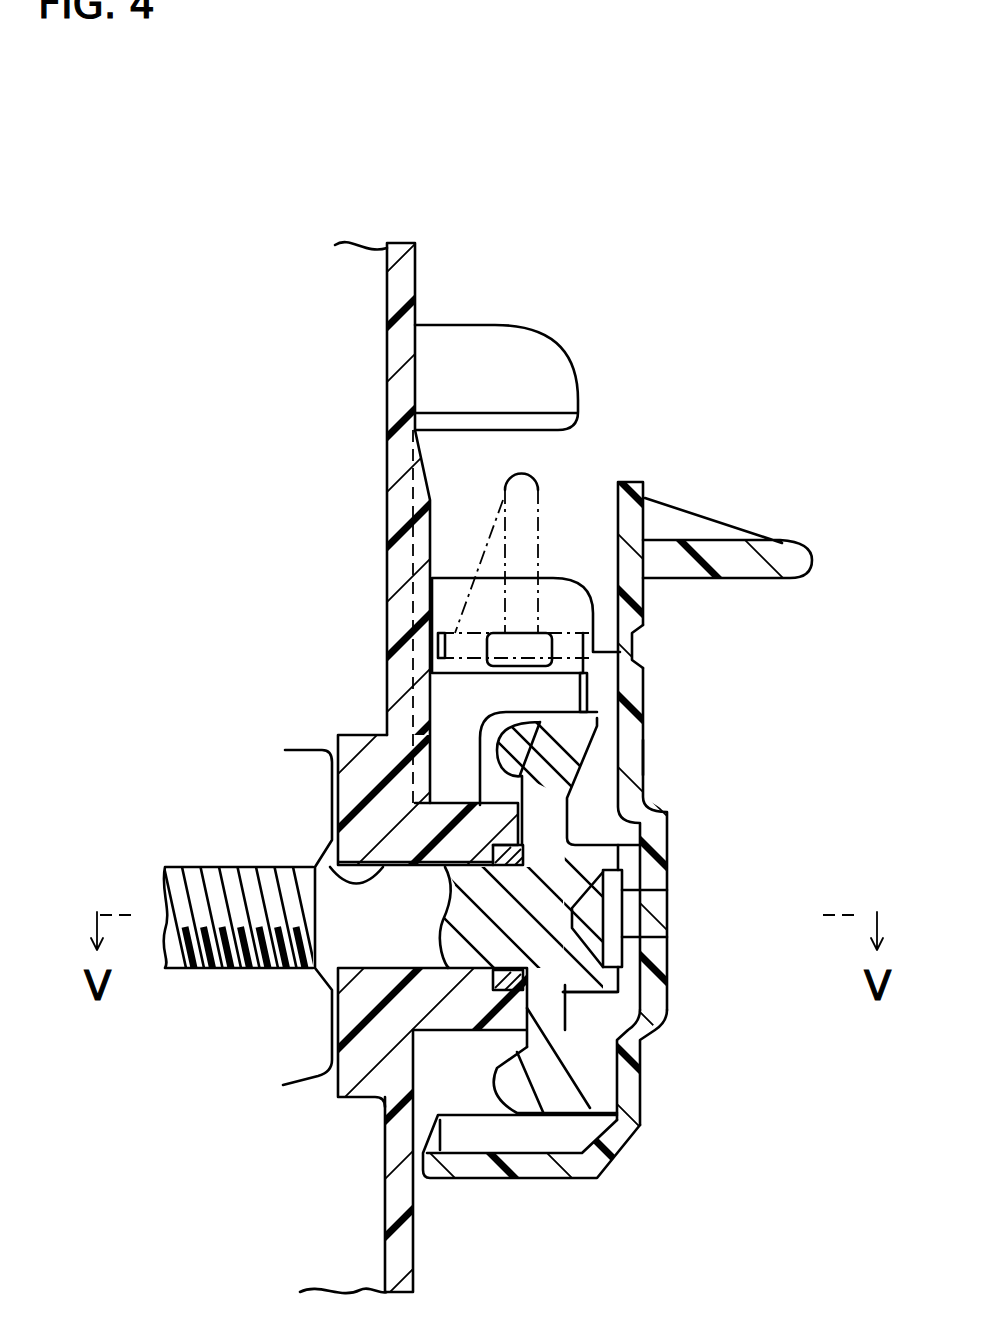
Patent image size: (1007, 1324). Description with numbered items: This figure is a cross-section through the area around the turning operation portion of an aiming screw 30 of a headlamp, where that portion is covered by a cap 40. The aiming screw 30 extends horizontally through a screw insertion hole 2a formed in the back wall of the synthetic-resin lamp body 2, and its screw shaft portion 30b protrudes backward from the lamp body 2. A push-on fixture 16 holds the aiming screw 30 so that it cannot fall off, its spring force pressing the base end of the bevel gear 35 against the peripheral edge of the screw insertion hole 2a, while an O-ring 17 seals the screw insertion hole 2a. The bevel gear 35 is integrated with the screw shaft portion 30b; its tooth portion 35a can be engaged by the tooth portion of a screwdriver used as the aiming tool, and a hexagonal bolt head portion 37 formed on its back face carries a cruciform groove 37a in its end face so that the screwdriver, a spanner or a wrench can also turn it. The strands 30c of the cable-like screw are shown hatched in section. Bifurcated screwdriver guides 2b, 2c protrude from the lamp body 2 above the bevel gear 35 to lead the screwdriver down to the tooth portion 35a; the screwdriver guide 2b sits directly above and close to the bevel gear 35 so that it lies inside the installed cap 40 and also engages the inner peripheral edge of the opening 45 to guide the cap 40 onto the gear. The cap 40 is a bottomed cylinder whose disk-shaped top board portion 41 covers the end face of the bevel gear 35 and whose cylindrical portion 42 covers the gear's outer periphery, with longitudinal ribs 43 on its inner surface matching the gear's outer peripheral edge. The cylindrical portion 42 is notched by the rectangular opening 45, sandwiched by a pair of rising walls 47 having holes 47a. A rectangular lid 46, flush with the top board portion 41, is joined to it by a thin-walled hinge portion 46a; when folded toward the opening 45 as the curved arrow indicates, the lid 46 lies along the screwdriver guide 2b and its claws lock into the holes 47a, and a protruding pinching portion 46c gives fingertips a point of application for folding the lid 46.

The lamp body 2 is at (387, 385).
The screw insertion hole 2a is at (313, 864).
The screwdriver guide 2b is at (590, 683).
The screwdriver guide 2c is at (497, 325).
The push-on fixture 16 is at (327, 813).
The O-ring 17 is at (520, 855).
The aiming screw 30 is at (205, 987).
The screw shaft portion 30b is at (383, 950).
The cable strands 30c is at (248, 970).
The bevel gear 35 is at (553, 1088).
The tooth portion 35a is at (497, 745).
The hexagonal bolt head portion 37 is at (590, 985).
The cruciform groove 37a is at (597, 918).
The cap 40 is at (672, 1071).
The top board portion 41 is at (648, 757).
The cylindrical portion 42 is at (548, 1180).
The longitudinal rib 43 is at (478, 1112).
The opening 45 is at (569, 541).
The lid 46 is at (810, 540).
The hinge portion 46a is at (632, 647).
The pinching portion 46c is at (815, 562).
The rising wall 47 is at (445, 598).
The hole 47a is at (490, 655).